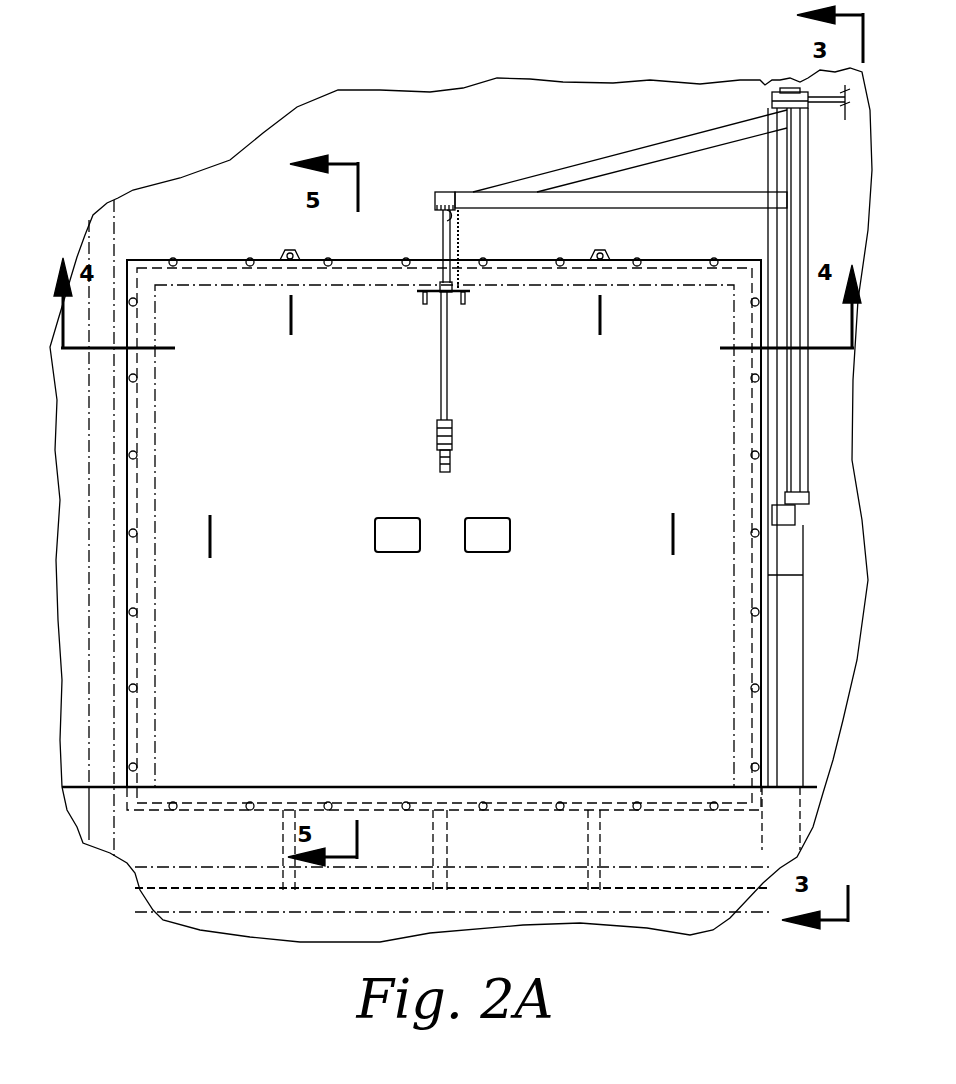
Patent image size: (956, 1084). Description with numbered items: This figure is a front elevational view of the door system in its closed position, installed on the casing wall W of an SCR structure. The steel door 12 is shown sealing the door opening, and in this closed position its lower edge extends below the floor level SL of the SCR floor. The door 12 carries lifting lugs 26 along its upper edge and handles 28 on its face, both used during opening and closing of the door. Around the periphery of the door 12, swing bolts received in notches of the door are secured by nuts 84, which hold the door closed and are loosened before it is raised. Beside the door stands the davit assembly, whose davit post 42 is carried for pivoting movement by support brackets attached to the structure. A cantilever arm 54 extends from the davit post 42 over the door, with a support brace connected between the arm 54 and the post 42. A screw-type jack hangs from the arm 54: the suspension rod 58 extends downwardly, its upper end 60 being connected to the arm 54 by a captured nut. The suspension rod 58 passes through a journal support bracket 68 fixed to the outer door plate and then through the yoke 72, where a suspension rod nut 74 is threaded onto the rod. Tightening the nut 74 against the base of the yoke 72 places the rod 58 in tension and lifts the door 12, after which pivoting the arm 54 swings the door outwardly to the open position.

The door 12 is at (720, 679).
The lifting lugs 26 is at (288, 312).
The handles 28 is at (214, 546).
The davit post 42 is at (789, 158).
The cantilever arm 54 is at (707, 195).
The suspension rod 58 is at (448, 320).
The upper end of suspension rod 60 is at (448, 215).
The journal support bracket 68 is at (424, 293).
The yoke 72 is at (453, 448).
The suspension rod nut 74 is at (437, 462).
The nuts 84 is at (136, 612).
The floor level SL is at (100, 787).
The casing wall W is at (604, 104).